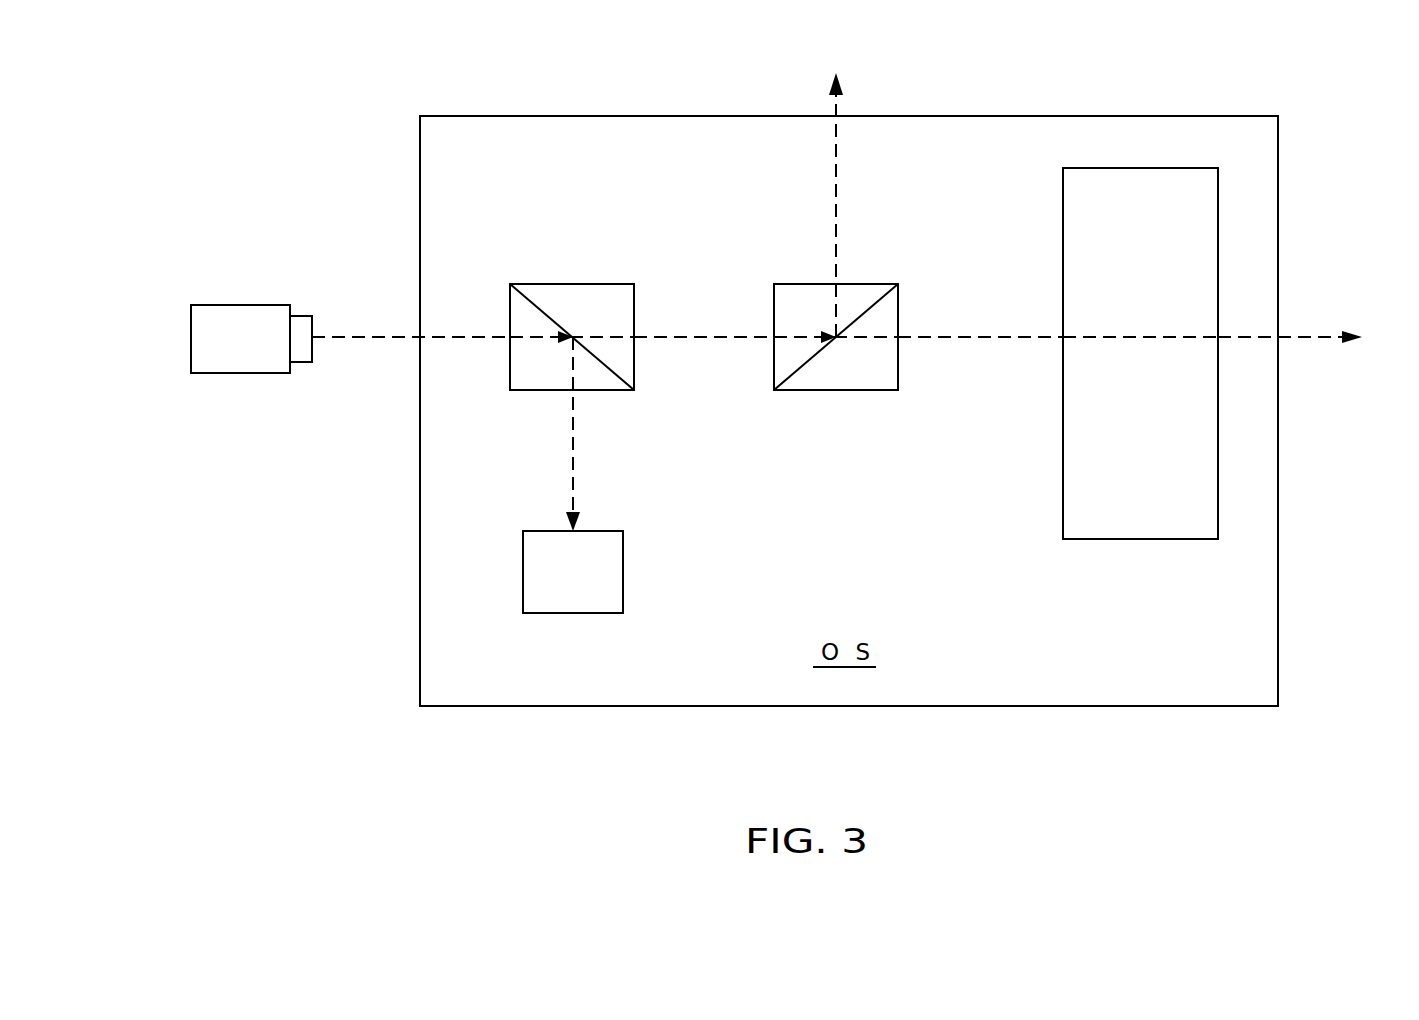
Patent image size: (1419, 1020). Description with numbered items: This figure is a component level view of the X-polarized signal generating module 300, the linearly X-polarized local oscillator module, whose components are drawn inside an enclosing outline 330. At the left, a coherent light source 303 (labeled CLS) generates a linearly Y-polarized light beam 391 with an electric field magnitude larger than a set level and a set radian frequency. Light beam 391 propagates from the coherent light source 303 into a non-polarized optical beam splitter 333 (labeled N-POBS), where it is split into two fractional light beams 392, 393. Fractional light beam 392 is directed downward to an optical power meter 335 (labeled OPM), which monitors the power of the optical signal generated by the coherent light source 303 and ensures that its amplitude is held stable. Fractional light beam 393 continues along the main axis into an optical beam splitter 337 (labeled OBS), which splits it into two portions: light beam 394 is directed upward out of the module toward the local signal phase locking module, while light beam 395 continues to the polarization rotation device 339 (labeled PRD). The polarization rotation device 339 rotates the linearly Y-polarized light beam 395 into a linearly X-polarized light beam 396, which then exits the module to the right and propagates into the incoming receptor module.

The X-polarized signal generating module 300 is at (629, 99).
The optical system housing 330 is at (1147, 115).
The coherent light source 303 is at (256, 304).
The linearly Y-polarized light beam 391 is at (338, 338).
The non-polarized optical beam splitter 333 is at (574, 284).
The fractional light beam 393 is at (672, 337).
The fractional light beam 392 is at (573, 451).
The optical power meter 335 is at (573, 613).
The optical beam splitter 337 is at (829, 390).
The light beam 394 is at (836, 214).
The light beam 395 is at (940, 337).
The polarization rotation device 339 is at (1125, 539).
The linearly X-polarized light beam 396 is at (1303, 337).